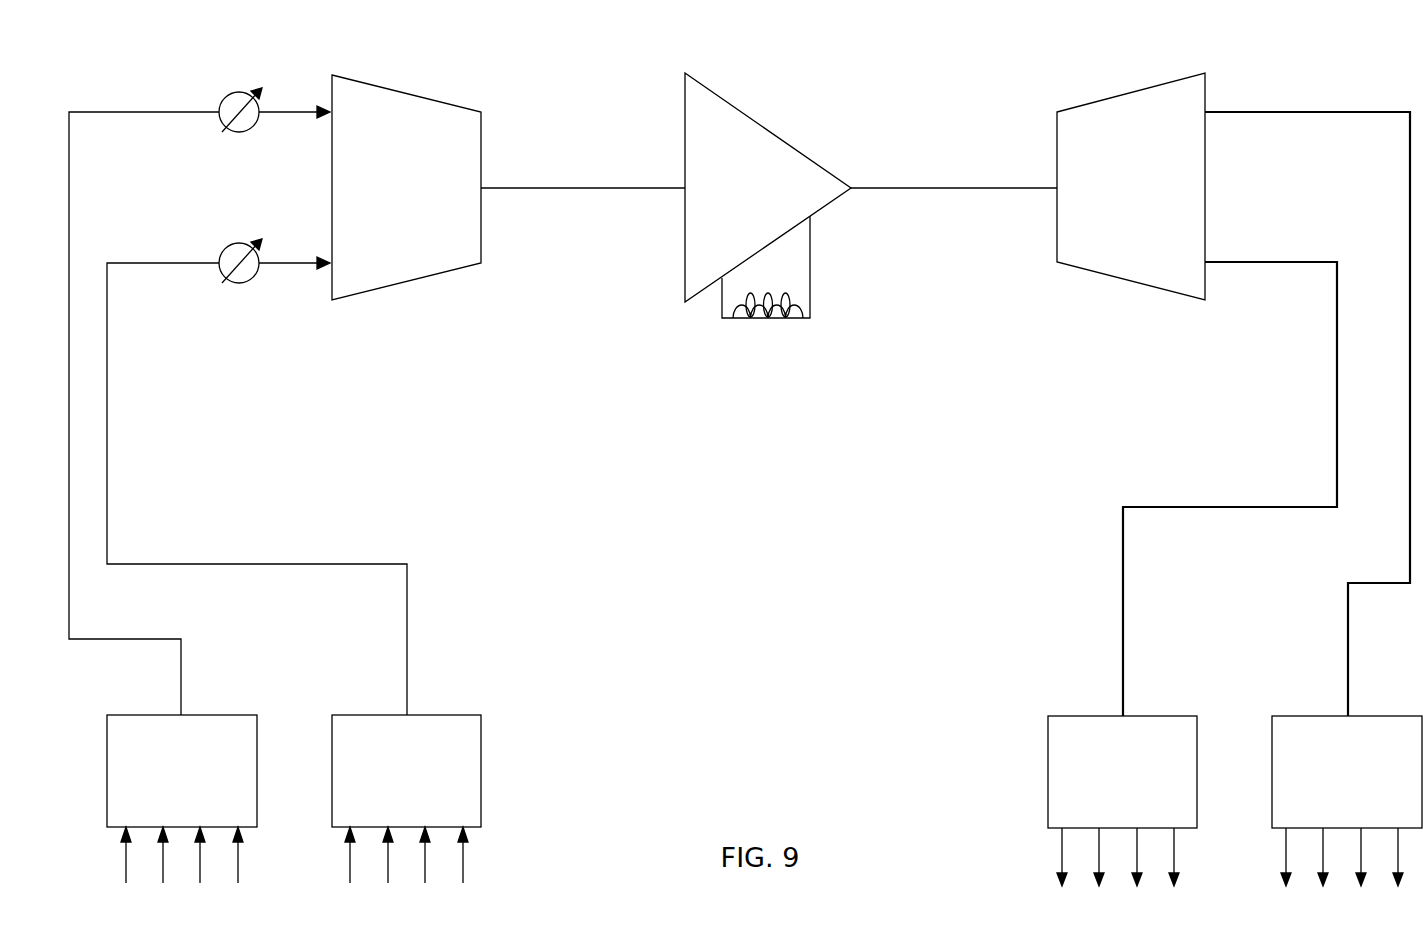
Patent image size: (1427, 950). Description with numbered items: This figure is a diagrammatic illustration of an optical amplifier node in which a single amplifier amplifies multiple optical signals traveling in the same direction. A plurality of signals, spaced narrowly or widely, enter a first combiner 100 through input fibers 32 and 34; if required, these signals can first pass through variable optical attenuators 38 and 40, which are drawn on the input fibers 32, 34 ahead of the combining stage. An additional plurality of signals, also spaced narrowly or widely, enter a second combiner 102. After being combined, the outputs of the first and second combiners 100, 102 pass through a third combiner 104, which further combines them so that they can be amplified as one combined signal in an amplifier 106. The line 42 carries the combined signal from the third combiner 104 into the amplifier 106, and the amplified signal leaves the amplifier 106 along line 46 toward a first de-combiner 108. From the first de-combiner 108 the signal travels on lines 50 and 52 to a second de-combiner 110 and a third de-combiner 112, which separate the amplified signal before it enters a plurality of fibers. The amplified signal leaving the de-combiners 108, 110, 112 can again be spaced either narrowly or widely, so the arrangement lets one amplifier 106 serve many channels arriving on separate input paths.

The input fiber 32 is at (295, 110).
The input fiber 34 is at (200, 262).
The variable optical attenuator 38 is at (240, 92).
The variable optical attenuator 40 is at (240, 243).
The combined signal fiber 42 is at (647, 187).
The amplified output fiber 46 is at (983, 185).
The first output optical fiber 50 is at (1263, 110).
The second output optical fiber 52 is at (1272, 260).
The first combiner 100 is at (165, 788).
The second combiner 102 is at (385, 788).
The third combiner 104 is at (385, 203).
The amplifier 106 is at (724, 204).
The first de-combiner 108 is at (1115, 203).
The second de-combiner 110 is at (1105, 788).
The third de-combiner 112 is at (1334, 788).